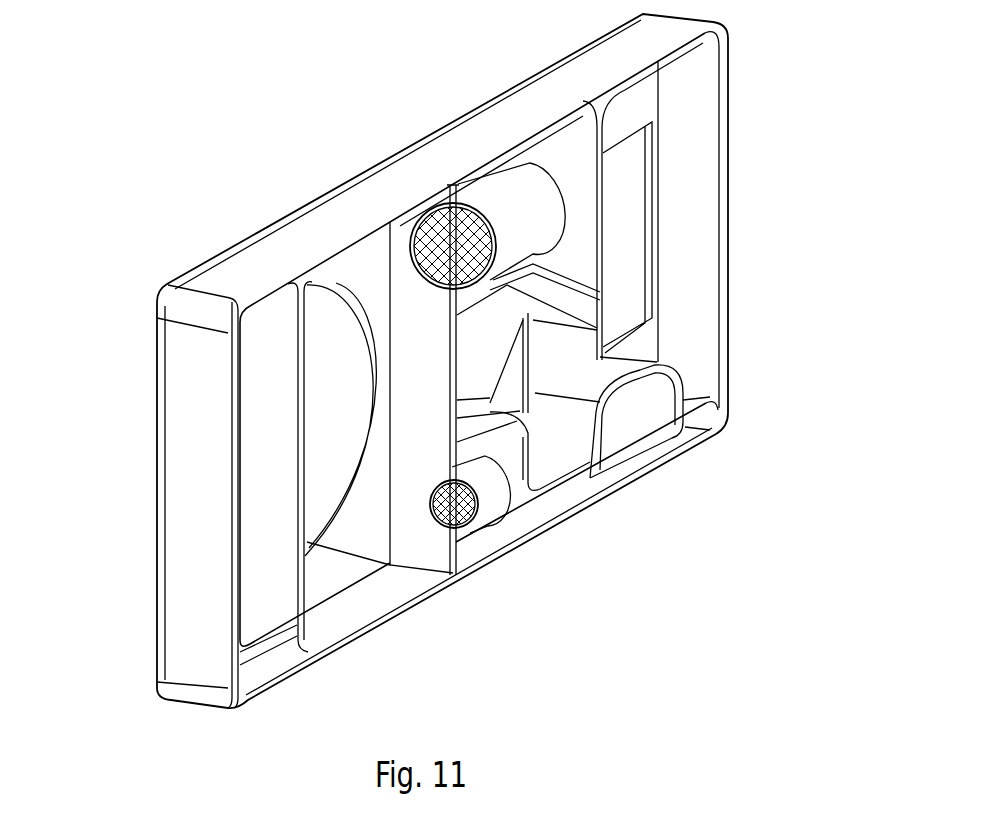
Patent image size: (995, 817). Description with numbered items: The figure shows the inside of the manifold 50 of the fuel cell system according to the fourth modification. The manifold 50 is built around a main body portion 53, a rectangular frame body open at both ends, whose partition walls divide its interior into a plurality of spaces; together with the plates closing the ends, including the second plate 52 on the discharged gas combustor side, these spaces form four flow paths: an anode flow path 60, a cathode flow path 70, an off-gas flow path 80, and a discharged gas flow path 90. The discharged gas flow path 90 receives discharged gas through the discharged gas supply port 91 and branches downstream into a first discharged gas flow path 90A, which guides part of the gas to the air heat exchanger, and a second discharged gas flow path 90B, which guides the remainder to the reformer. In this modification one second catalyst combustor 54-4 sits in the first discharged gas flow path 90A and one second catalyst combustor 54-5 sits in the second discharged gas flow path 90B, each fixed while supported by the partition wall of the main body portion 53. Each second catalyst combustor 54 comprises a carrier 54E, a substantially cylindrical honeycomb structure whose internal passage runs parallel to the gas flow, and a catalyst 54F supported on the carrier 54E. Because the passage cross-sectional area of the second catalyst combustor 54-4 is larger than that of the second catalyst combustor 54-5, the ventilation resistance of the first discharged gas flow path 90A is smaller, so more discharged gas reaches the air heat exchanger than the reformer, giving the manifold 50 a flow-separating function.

The manifold 50 is at (150, 170).
The second plate 52 is at (227, 252).
The main body portion 53 is at (268, 248).
The second catalyst combustor 54 is at (464, 347).
The second catalyst combustor 54-4 is at (464, 323).
The second catalyst combustor 54-5 is at (564, 640).
The catalyst 54F is at (445, 217).
The carrier 54E is at (487, 190).
The anode flow path 60 is at (688, 122).
The cathode flow path 70 is at (573, 367).
The off-gas flow path 80 is at (250, 467).
The discharged gas flow path 90 is at (360, 567).
The first discharged gas flow path 90A is at (552, 153).
The second discharged gas flow path 90B is at (598, 468).
The discharged gas supply port 91 is at (340, 283).